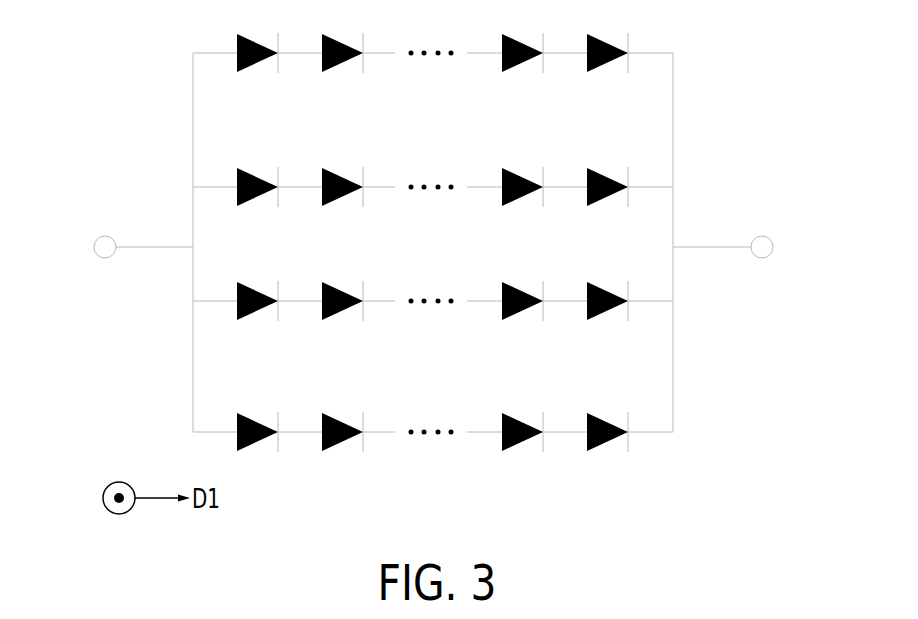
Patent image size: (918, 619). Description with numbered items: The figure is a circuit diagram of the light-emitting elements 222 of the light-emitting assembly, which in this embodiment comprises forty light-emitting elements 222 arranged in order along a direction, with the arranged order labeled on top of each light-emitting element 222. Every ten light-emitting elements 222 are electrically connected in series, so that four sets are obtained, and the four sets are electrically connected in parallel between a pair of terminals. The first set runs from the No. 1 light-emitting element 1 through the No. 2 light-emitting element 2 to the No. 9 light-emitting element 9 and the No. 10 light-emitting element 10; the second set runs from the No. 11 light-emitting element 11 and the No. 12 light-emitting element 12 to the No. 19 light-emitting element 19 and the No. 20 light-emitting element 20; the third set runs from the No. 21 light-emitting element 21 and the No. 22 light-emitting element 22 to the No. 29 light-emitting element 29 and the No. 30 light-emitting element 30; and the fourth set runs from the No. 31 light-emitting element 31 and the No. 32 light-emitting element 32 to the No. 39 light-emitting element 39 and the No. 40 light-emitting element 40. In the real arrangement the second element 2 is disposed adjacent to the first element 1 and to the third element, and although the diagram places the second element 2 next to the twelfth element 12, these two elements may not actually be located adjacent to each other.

The No. 1 light-emitting element 1 is at (257, 36).
The No. 2 light-emitting element 2 is at (342, 36).
The No. 9 light-emitting element 9 is at (522, 36).
The No. 10 light-emitting element 10 is at (607, 36).
The No. 11 light-emitting element 11 is at (256, 168).
The No. 12 light-emitting element 12 is at (342, 168).
The No. 19 light-emitting element 19 is at (522, 168).
The No. 20 light-emitting element 20 is at (607, 168).
The No. 21 light-emitting element 21 is at (256, 282).
The No. 22 light-emitting element 22 is at (342, 282).
The No. 29 light-emitting element 29 is at (522, 282).
The No. 30 light-emitting element 30 is at (607, 282).
The No. 31 light-emitting element 31 is at (256, 413).
The No. 32 light-emitting element 32 is at (342, 413).
The No. 39 light-emitting element 39 is at (522, 413).
The No. 40 light-emitting element 40 is at (607, 413).
The light-emitting element 222 is at (237, 36).